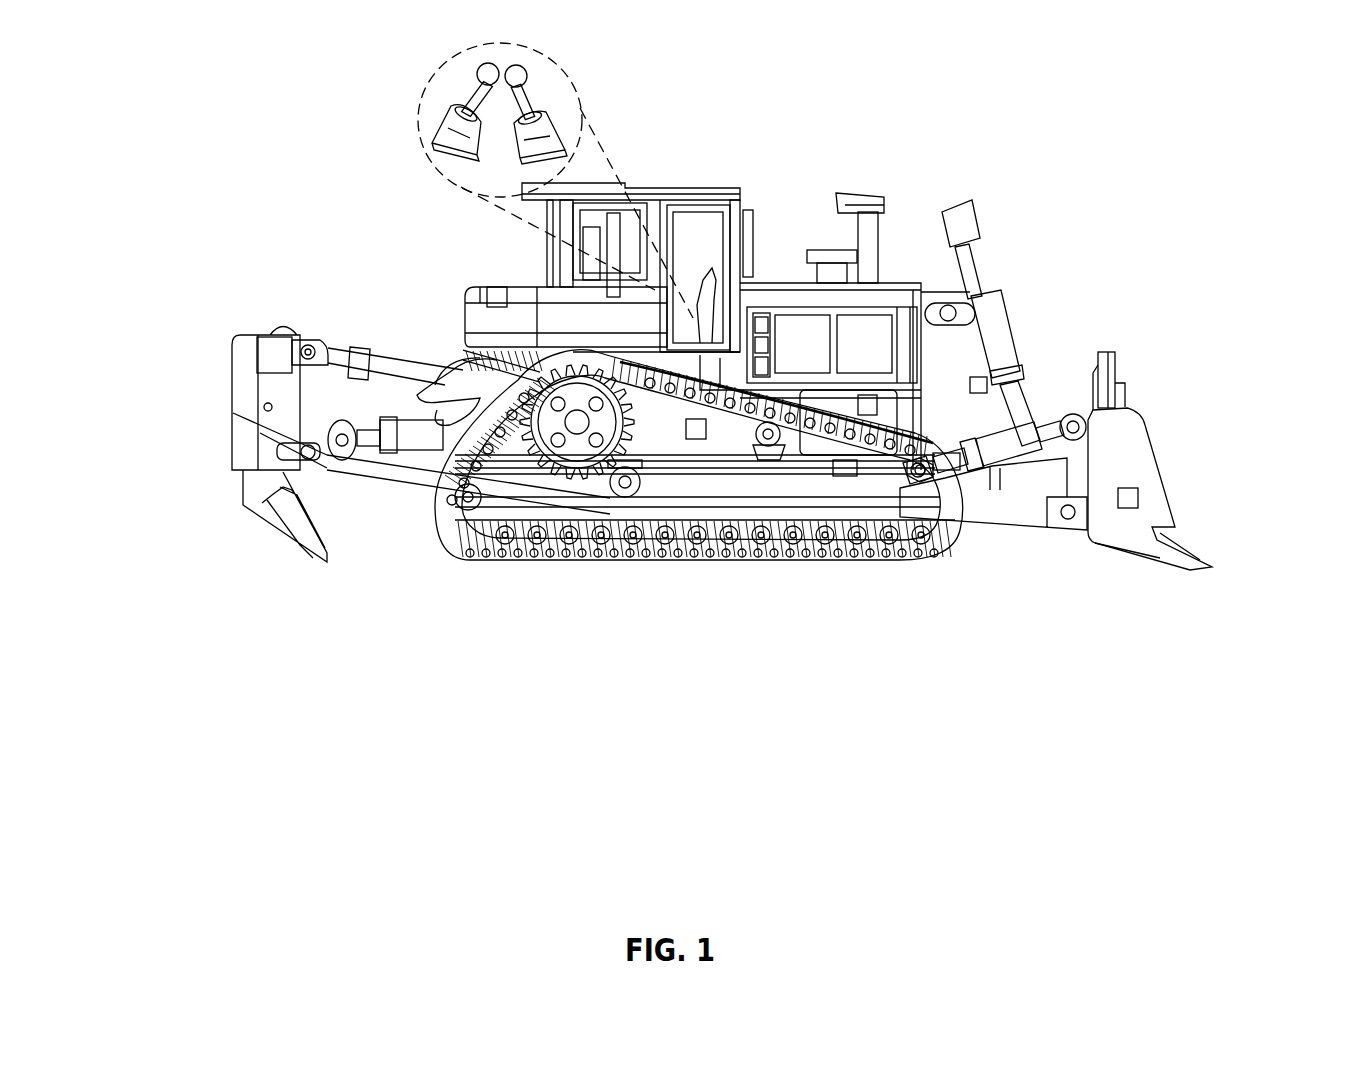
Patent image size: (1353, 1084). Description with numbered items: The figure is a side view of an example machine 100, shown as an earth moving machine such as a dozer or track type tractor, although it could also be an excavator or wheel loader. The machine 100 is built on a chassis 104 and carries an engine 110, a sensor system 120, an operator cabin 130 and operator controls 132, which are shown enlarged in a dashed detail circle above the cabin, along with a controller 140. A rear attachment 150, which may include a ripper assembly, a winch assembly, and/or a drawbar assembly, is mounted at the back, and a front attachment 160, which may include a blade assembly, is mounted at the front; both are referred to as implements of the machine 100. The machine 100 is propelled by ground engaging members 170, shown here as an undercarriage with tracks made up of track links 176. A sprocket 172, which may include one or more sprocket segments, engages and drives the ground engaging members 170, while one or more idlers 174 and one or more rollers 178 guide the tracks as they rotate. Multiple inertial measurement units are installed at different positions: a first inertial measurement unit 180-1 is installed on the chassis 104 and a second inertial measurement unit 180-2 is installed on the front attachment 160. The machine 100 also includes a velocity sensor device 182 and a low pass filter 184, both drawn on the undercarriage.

The machine 100 is at (190, 72).
The chassis 104 is at (930, 352).
The engine 110 is at (881, 351).
The sensor system 120 is at (762, 286).
The operator cabin 130 is at (683, 175).
The operator controls 132 is at (430, 78).
The controller 140 is at (624, 325).
The rear attachment 150 is at (262, 513).
The front attachment 160 is at (1140, 452).
The ground engaging members 170 is at (940, 587).
The sprocket 172 is at (577, 447).
The idlers 174 is at (467, 497).
The track links 176 is at (637, 545).
The rollers 178 is at (795, 532).
The inertial measurement unit 180-1 is at (487, 294).
The inertial measurement unit 180-2 is at (1138, 497).
The velocity sensor device 182 is at (695, 441).
The low pass filter 184 is at (867, 415).